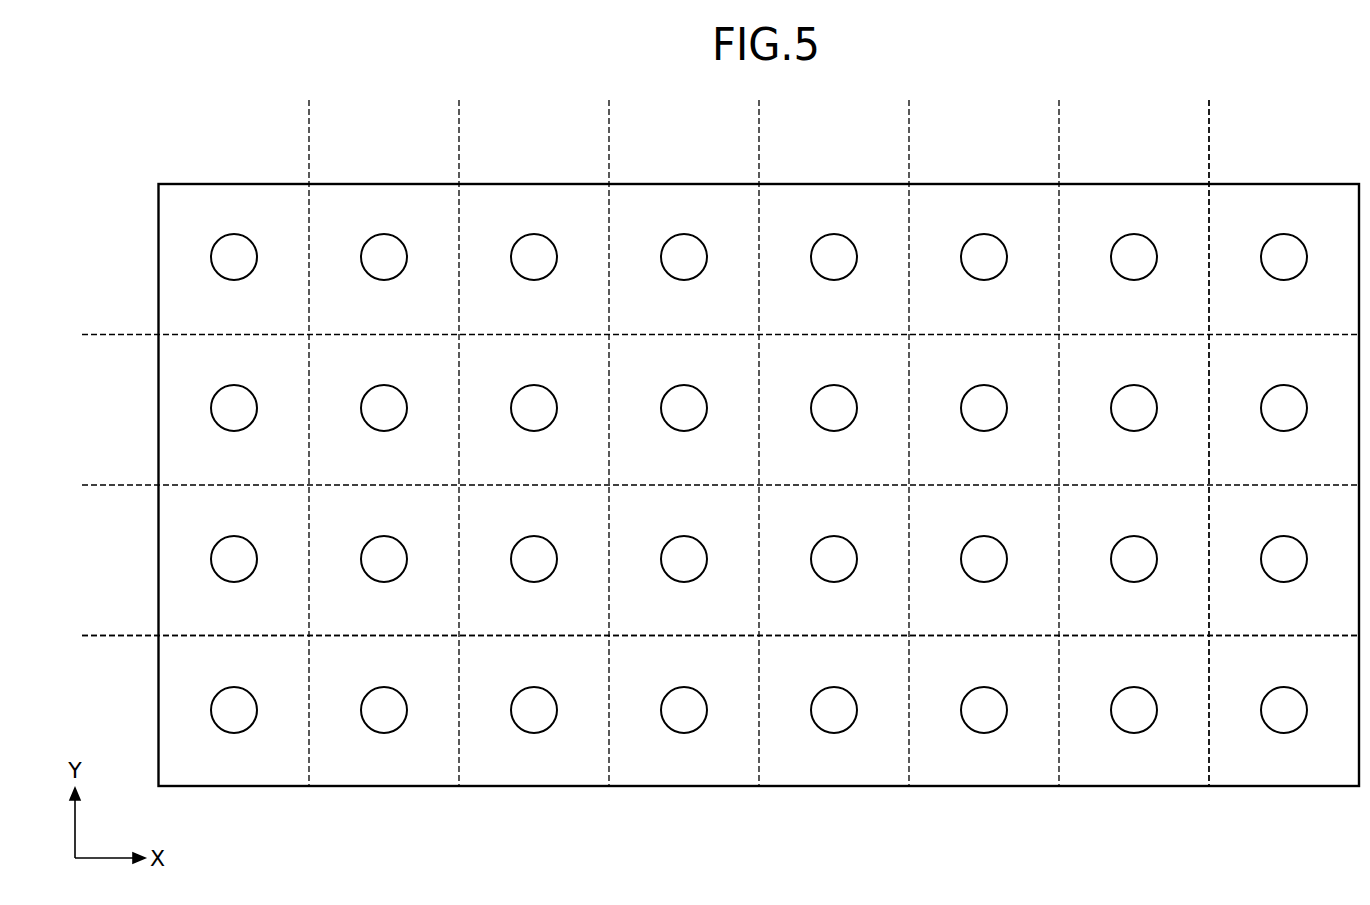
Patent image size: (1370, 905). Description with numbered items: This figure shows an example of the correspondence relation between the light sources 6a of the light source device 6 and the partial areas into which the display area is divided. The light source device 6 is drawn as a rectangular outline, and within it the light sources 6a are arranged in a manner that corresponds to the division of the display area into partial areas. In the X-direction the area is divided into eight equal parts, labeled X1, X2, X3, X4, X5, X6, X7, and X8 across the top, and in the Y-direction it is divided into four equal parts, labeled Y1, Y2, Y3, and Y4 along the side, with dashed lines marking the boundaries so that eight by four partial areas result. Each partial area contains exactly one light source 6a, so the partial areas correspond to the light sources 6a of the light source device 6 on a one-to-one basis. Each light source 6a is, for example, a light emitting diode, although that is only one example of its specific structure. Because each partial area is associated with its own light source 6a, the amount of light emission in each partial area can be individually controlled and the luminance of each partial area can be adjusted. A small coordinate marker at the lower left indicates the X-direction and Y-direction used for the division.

The light source device 6 is at (1330, 184).
The light source 6a is at (250, 273).
The first partial area division in X-direction X1 is at (266, 443).
The second partial area division in X-direction X2 is at (416, 443).
The third partial area division in X-direction X3 is at (566, 443).
The fourth partial area division in X-direction X4 is at (716, 443).
The fifth partial area division in X-direction X5 is at (866, 443).
The sixth partial area division in X-direction X6 is at (1016, 443).
The seventh partial area division in X-direction X7 is at (1166, 443).
The eighth partial area division in X-direction X8 is at (1253, 443).
The first partial area division in Y-direction Y1 is at (720, 682).
The second partial area division in Y-direction Y2 is at (720, 592).
The third partial area division in Y-direction Y3 is at (720, 441).
The fourth partial area division in Y-direction Y4 is at (720, 291).